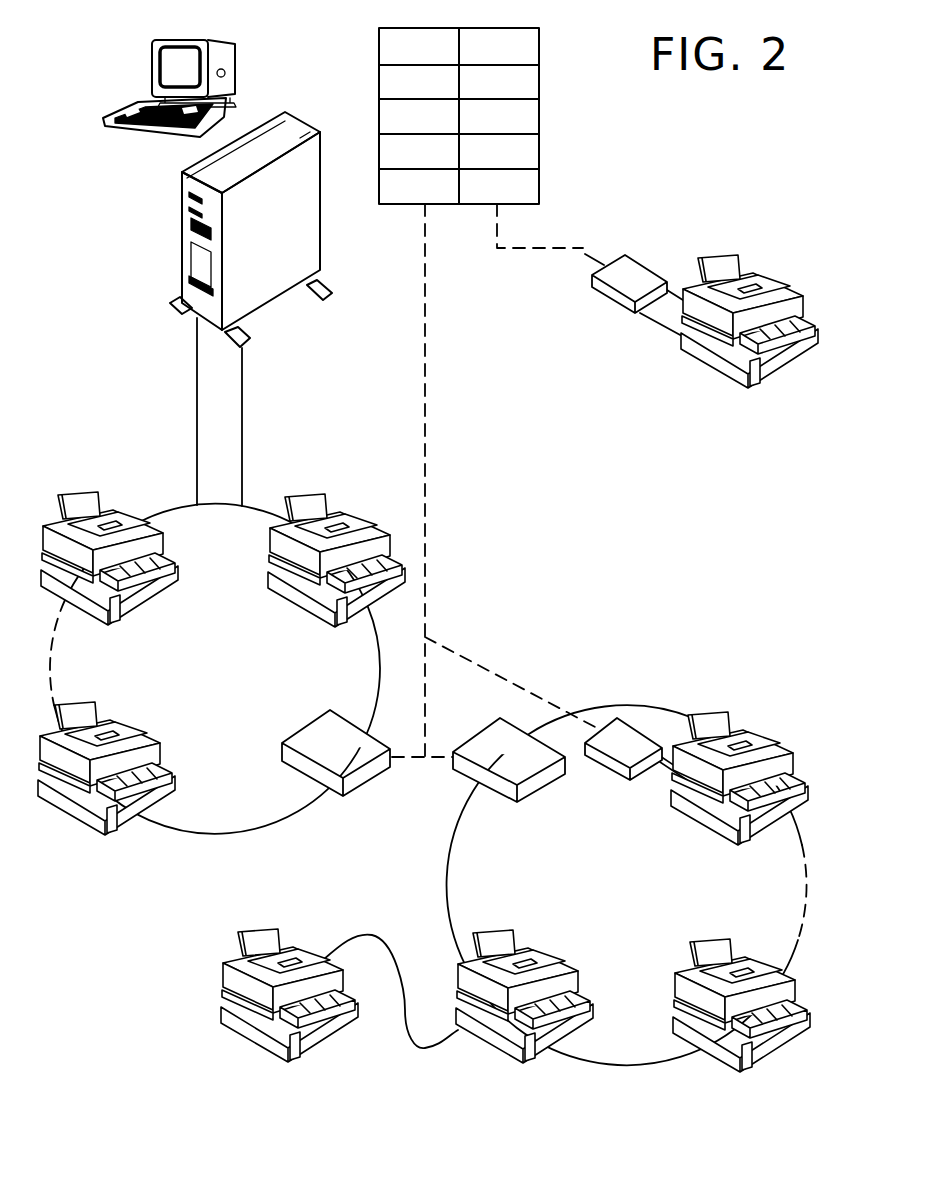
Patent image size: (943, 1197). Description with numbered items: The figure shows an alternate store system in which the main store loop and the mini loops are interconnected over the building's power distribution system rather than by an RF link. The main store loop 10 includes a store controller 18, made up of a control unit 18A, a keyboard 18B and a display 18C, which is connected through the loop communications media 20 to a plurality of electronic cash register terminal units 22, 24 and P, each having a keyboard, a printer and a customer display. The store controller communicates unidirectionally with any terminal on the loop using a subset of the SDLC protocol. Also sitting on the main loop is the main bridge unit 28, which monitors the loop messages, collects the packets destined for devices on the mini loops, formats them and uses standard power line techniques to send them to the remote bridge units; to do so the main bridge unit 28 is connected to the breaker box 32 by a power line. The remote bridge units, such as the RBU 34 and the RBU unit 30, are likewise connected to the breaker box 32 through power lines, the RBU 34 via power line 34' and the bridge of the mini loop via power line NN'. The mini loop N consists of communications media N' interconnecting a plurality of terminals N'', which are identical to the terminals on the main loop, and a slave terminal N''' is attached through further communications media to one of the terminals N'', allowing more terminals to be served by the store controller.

The main store loop 10 is at (133, 480).
The store controller 18 is at (145, 222).
The control unit 18A is at (320, 240).
The keyboard 18B is at (142, 128).
The display 18C is at (238, 70).
The loop communications media 20 is at (243, 392).
The terminal unit 22 is at (375, 528).
The terminal unit 24 is at (50, 522).
The main bridge unit 28 is at (308, 730).
The remote bridge unit 30 is at (530, 790).
The breaker box 32 is at (537, 110).
The remote bridge unit 34 is at (604, 298).
The power line 34' is at (555, 225).
The mini loop N is at (627, 843).
The communications media N' is at (615, 718).
The power line NN' is at (511, 682).
The terminal N'' is at (647, 886).
The slave terminal N''' is at (289, 976).
The terminal unit P is at (77, 822).